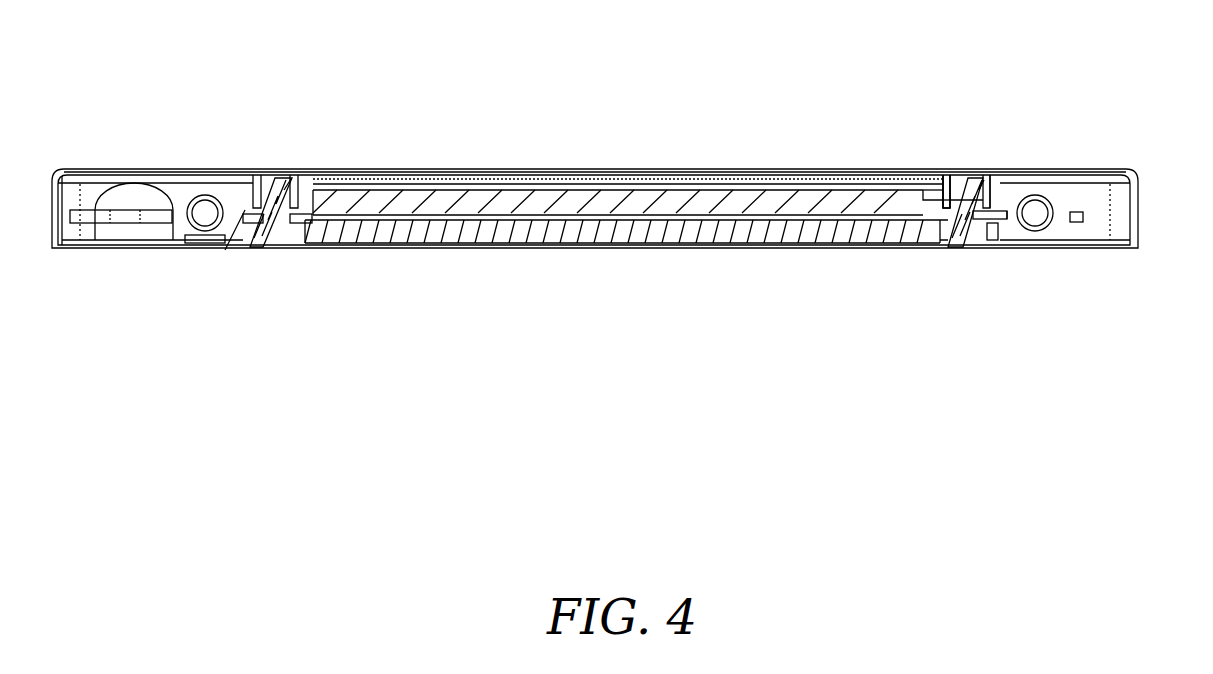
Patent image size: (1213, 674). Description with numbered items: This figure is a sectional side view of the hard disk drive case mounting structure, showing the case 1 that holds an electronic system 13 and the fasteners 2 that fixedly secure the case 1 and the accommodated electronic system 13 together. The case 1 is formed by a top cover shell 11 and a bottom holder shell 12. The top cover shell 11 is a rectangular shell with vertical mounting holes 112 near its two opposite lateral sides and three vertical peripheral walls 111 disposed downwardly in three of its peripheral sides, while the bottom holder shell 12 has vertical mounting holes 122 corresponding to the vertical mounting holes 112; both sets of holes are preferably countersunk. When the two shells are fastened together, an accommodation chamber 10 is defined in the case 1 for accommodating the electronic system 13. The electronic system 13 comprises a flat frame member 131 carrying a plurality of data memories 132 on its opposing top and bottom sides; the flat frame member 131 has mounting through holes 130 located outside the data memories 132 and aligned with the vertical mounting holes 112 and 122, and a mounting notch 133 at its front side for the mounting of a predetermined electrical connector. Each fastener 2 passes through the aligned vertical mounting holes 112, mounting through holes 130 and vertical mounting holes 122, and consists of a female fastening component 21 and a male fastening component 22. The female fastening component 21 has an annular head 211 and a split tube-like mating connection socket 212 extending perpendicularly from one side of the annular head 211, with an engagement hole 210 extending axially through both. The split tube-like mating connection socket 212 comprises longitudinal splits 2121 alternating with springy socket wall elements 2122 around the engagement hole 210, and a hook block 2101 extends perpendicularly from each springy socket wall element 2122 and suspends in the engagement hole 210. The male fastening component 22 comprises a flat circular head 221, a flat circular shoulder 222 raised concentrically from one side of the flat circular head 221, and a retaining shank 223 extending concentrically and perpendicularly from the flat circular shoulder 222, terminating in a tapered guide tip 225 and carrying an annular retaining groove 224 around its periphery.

The case 1 is at (136, 98).
The accommodation chamber 10 is at (74, 186).
The top cover shell 11 is at (137, 183).
The vertical peripheral walls 111 is at (200, 193).
The vertical mounting holes 112 is at (300, 176).
The bottom holder shell 12 is at (422, 248).
The vertical mounting holes 122 is at (297, 232).
The electronic system 13 is at (488, 98).
The mounting through holes 130 is at (308, 233).
The flat frame member 131 is at (118, 223).
The data memories 132 is at (486, 172).
The mounting notch 133 is at (229, 228).
The fasteners 2 is at (1010, 330).
The female fastening component 21 is at (1006, 74).
The engagement hole 210 is at (972, 164).
The hook block 2101 is at (916, 245).
The annular head 211 is at (946, 178).
The split tube-like mating connection socket 212 is at (854, 96).
The longitudinal splits 2121 is at (952, 172).
The springy socket wall elements 2122 is at (953, 162).
The male fastening component 22 is at (971, 258).
The flat circular head 221 is at (977, 252).
The flat circular shoulder 222 is at (998, 227).
The retaining shank 223 is at (1008, 213).
The annular retaining groove 224 is at (1004, 211).
The tapered guide tip 225 is at (985, 190).